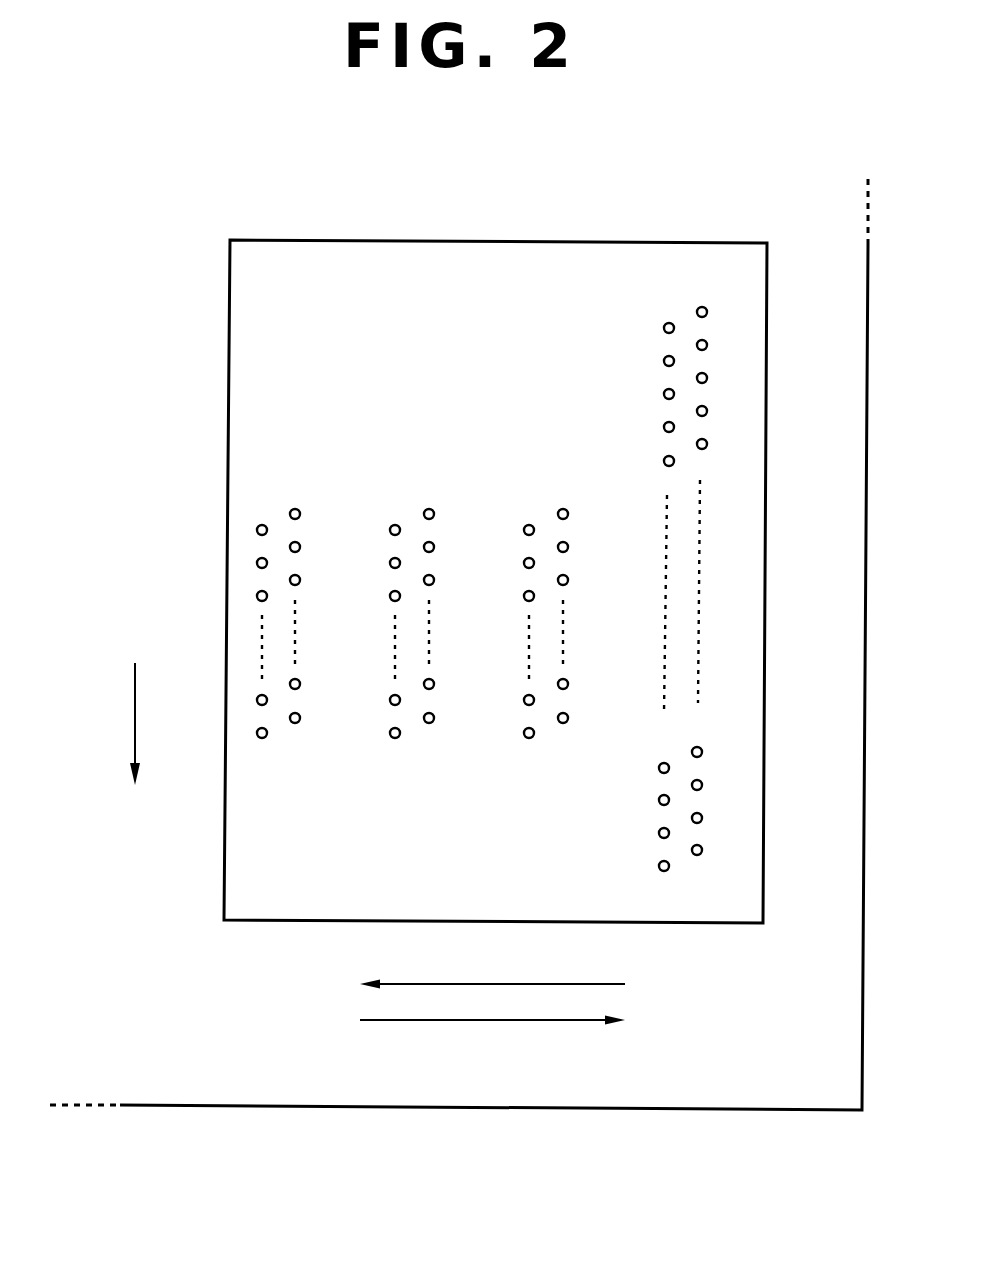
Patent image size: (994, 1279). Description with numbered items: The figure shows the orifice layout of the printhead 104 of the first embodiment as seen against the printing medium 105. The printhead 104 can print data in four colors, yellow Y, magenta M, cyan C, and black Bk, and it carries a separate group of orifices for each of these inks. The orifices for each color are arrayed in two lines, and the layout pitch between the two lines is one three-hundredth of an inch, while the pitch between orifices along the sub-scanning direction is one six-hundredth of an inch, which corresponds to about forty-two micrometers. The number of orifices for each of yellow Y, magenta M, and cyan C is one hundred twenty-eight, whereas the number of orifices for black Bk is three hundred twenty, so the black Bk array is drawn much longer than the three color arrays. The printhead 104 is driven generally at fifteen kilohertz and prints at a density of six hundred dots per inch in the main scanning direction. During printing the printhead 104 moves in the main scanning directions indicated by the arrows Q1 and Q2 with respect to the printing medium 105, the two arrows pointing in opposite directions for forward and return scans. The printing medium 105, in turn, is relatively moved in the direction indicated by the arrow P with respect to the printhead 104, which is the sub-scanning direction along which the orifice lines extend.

The printhead 104 is at (494, 243).
The printing medium 105 is at (562, 1110).
The magenta M is at (278, 569).
The yellow Y is at (412, 569).
The cyan C is at (546, 569).
The black Bk is at (685, 565).
The arrow P is at (146, 724).
The arrow Q1 is at (515, 1021).
The arrow Q2 is at (515, 984).